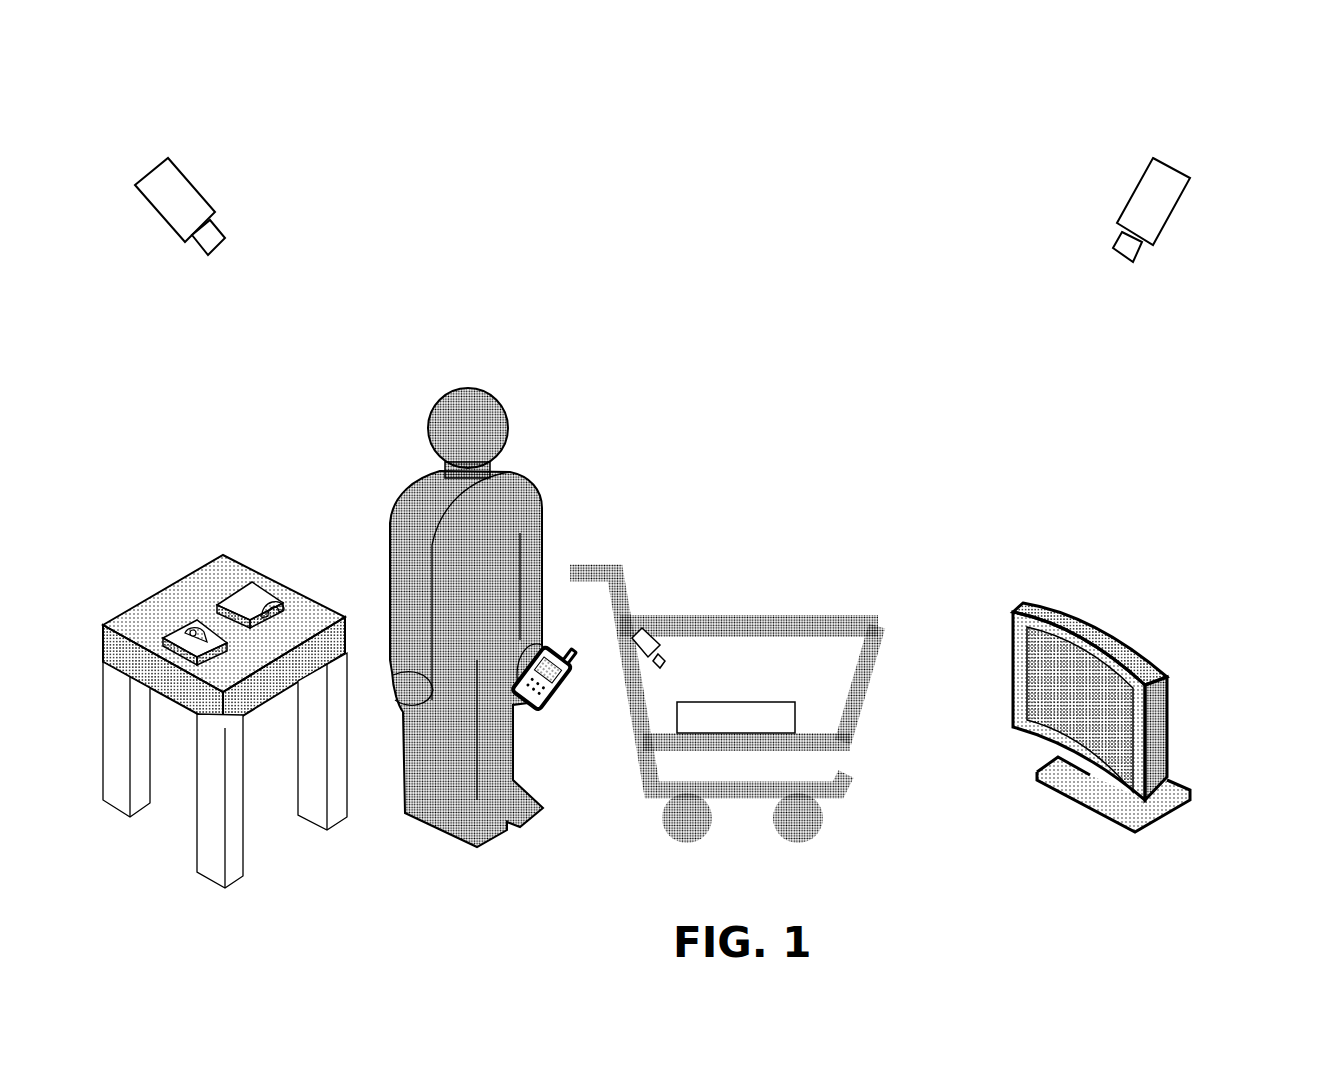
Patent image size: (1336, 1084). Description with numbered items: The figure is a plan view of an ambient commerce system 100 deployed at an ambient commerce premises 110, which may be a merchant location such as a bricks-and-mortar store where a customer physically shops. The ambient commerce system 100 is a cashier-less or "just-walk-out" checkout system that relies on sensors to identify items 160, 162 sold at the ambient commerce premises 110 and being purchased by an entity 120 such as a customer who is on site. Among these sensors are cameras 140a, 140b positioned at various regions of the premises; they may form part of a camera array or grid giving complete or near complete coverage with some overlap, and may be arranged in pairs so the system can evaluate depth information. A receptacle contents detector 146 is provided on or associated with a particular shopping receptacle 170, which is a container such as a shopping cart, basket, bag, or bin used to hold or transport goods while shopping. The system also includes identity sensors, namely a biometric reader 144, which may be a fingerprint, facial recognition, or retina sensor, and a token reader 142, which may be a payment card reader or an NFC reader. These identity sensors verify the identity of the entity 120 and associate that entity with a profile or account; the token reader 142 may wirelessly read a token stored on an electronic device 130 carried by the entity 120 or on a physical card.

The ambient commerce system 100 is at (101, 108).
The ambient commerce premises 110 is at (678, 188).
The entity 120 is at (504, 395).
The electronic device 130 is at (552, 702).
The camera 140a is at (215, 212).
The camera 140b is at (1193, 180).
The token reader 142 is at (283, 592).
The biometric reader 144 is at (153, 637).
The receptacle contents detector 146 is at (670, 641).
The item 160 is at (800, 703).
The item 162 is at (1170, 710).
The shopping receptacle 170 is at (805, 614).